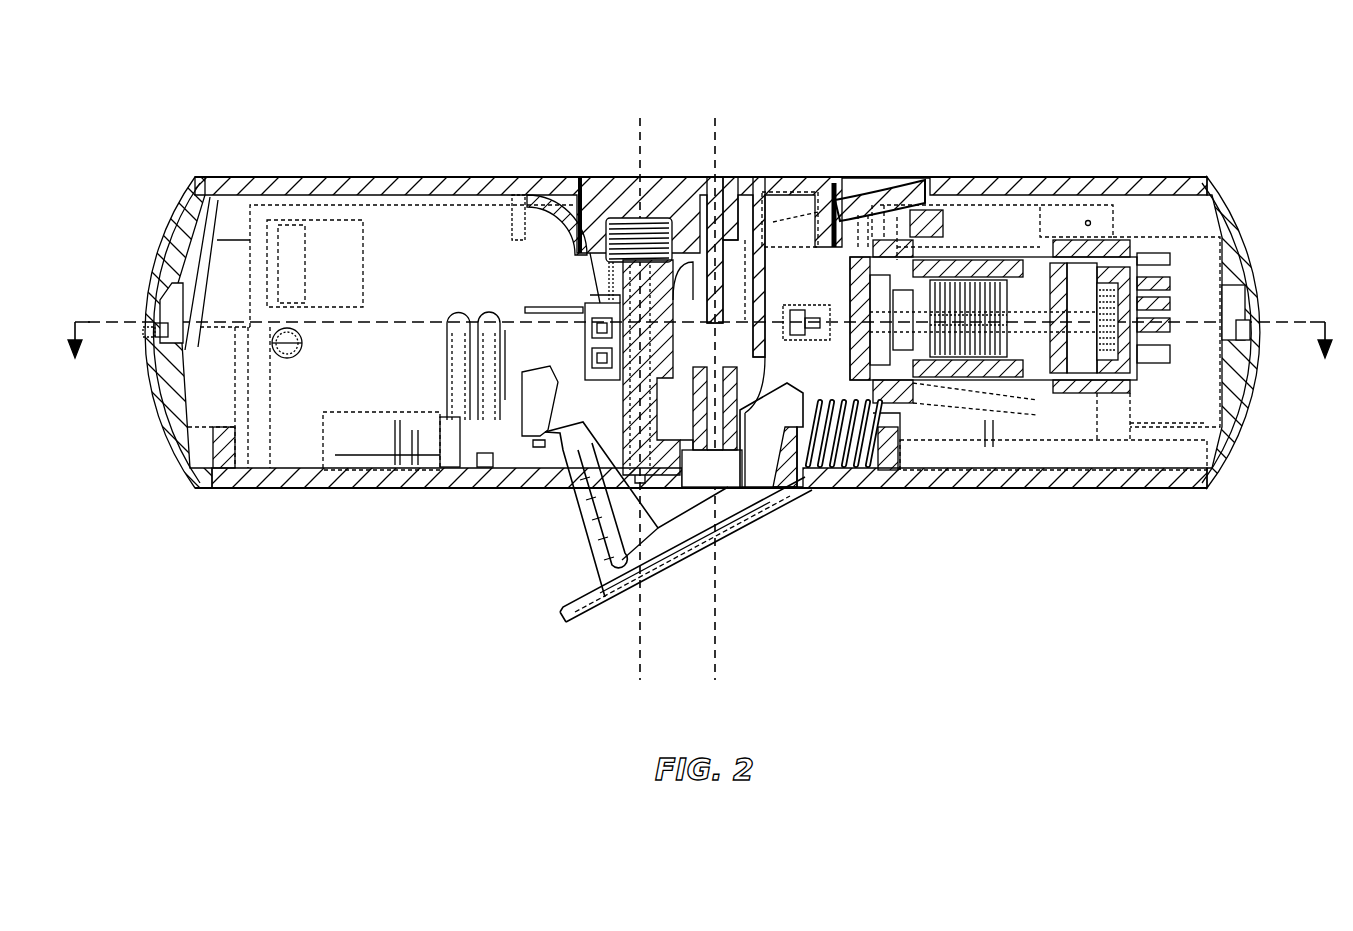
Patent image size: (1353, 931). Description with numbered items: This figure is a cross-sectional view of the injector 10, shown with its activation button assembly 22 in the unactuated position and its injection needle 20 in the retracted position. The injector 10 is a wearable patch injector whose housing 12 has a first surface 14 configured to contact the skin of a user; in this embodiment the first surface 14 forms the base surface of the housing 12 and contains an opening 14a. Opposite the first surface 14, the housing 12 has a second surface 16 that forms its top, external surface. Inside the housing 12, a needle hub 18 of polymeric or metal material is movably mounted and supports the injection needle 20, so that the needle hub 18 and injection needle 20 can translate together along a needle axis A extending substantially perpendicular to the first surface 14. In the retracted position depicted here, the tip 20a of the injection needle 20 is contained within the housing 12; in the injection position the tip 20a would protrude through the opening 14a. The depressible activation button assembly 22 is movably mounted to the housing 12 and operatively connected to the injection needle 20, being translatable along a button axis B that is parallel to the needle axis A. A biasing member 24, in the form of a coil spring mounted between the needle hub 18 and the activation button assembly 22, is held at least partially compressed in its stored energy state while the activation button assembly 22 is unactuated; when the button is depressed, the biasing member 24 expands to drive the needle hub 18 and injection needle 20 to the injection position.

The injector 10 is at (312, 126).
The housing 12 is at (1118, 168).
The first surface 14 is at (1050, 492).
The opening 14a is at (727, 490).
The second surface 16 is at (978, 177).
The needle hub 18 is at (590, 200).
The injection needle 20 is at (598, 499).
The tip 20a is at (573, 505).
The activation button assembly 22 is at (743, 178).
The biasing member 24 is at (632, 212).